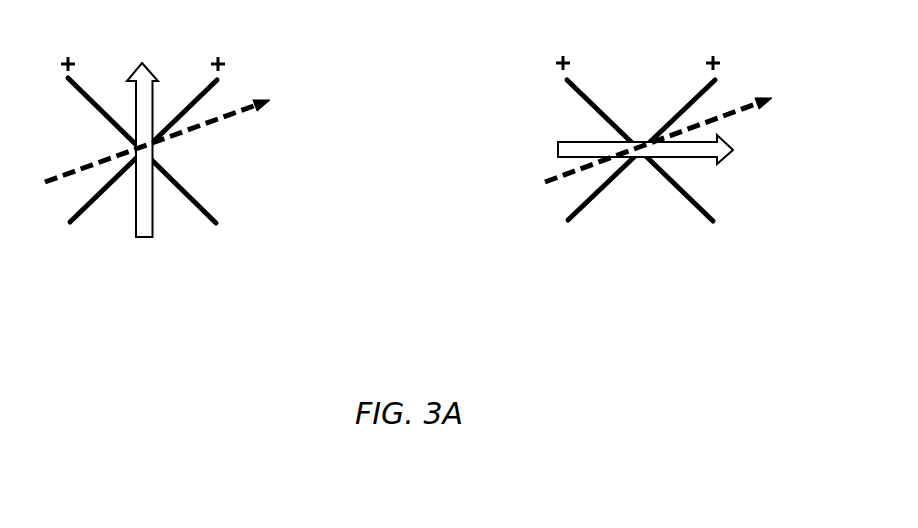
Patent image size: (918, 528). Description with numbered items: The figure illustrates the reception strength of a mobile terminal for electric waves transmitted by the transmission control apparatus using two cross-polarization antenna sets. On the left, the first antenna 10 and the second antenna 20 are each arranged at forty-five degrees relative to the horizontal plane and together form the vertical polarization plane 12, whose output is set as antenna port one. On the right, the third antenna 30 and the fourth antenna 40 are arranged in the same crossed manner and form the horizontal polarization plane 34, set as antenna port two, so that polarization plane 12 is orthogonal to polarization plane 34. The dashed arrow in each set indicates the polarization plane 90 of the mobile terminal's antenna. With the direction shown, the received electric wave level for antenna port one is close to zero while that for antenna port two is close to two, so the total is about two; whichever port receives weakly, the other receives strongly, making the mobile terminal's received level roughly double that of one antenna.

The first antenna 10 is at (207, 218).
The second antenna 20 is at (79, 218).
The polarization plane 12 is at (143, 62).
The polarization plane of the antenna of the mobile terminal 90 is at (269, 103).
The third antenna 30 is at (703, 216).
The fourth antenna 40 is at (579, 216).
The polarization plane 34 is at (734, 151).